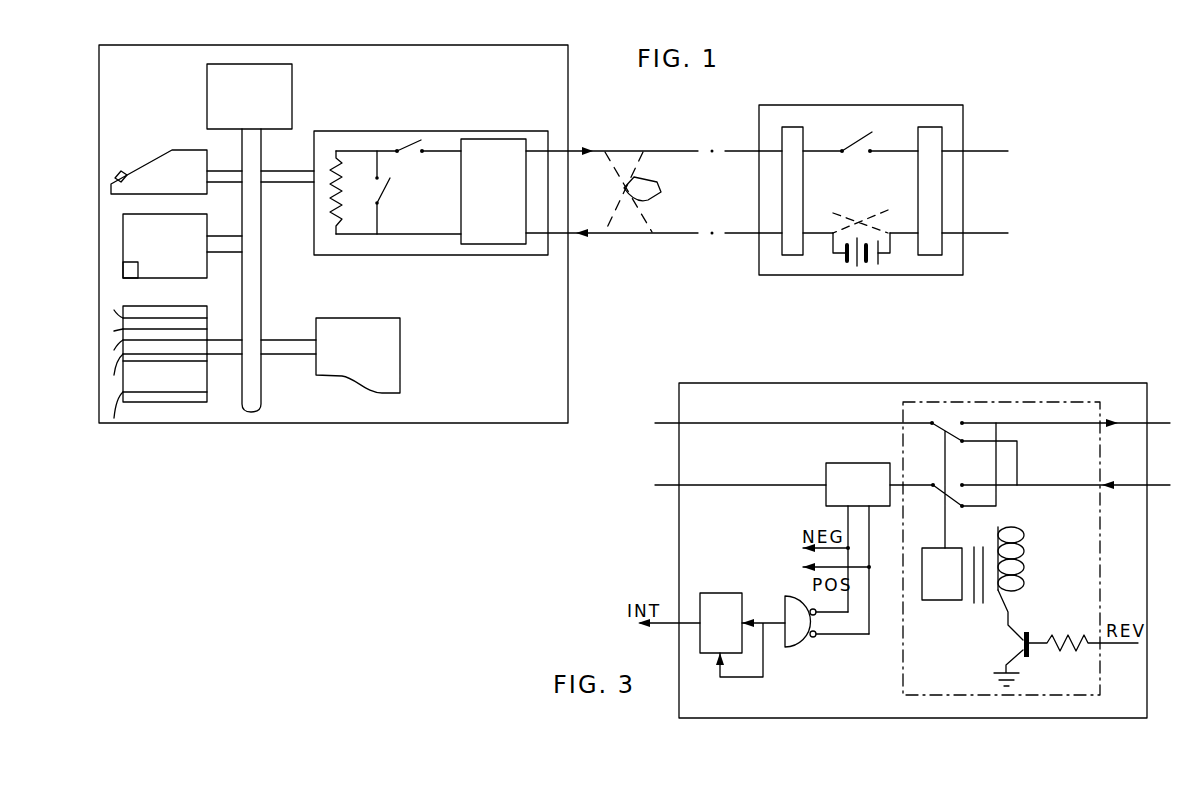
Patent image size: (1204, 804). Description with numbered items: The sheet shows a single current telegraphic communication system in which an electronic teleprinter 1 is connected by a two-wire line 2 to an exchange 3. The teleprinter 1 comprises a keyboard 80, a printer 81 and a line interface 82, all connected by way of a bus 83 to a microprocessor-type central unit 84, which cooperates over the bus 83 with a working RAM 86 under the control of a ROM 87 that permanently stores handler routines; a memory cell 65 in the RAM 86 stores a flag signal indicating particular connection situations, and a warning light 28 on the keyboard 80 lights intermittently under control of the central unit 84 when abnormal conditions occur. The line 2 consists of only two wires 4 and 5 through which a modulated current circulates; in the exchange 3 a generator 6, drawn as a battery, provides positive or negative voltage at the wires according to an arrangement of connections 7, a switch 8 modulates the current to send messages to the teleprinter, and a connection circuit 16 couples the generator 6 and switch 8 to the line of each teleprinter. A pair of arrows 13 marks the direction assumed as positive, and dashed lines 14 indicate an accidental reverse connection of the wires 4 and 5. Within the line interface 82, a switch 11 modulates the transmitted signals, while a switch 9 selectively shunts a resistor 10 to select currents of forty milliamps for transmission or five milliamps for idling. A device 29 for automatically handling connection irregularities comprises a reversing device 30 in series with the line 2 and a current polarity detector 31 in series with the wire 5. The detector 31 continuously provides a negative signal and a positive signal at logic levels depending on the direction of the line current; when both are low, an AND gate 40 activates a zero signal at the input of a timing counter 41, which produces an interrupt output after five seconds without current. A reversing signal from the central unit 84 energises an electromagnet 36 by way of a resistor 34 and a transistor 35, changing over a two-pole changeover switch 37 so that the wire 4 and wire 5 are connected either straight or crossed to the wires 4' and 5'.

In FIG. 1, the electronic teleprinter 1 is at (558, 84).
In FIG. 1, the two-wire line 2 is at (700, 244).
In FIG. 3, the two-wire line 2 is at (1159, 414).
In FIG. 1, the exchange 3 is at (873, 104).
In FIG. 1, the wire 4 is at (642, 136).
In FIG. 3, the wire 4 is at (1162, 444).
In FIG. 1, the wire 5 is at (642, 220).
In FIG. 3, the wire 5 is at (1168, 504).
In FIG. 1, the generator 6 is at (872, 258).
In FIG. 1, the arrangement of connections 7 is at (853, 213).
In FIG. 1, the switch 8 is at (846, 143).
In FIG. 1, the switch 9 is at (383, 190).
In FIG. 1, the resistor 10 is at (338, 198).
In FIG. 1, the switch 11 is at (408, 153).
In FIG. 1, the pair of arrows 13 is at (596, 155).
In FIG. 3, the pair of arrows 13 is at (1118, 428).
In FIG. 1, the dashed lines 14 is at (656, 186).
In FIG. 1, the connection circuit 16 is at (937, 285).
In FIG. 1, the warning light 28 is at (121, 171).
In FIG. 1, the device for automatically handling connection irregularities 29 is at (500, 238).
In FIG. 3, the device for automatically handling connection irregularities 29 is at (679, 569).
In FIG. 3, the reversing device 30 is at (903, 685).
In FIG. 3, the current polarity detector 31 is at (830, 496).
In FIG. 3, the resistor 34 is at (1050, 636).
In FIG. 3, the transistor 35 is at (1033, 655).
In FIG. 3, the electromagnet 36 is at (948, 594).
In FIG. 3, the two-pole changeover switch 37 is at (928, 428).
In FIG. 3, the AND gate 40 is at (797, 640).
In FIG. 3, the timing counter 41 is at (705, 593).
In FIG. 3, the wire 4' is at (912, 407).
In FIG. 3, the wire 5' is at (912, 469).
In FIG. 1, the memory cell 65 is at (133, 272).
In FIG. 1, the keyboard 80 is at (178, 152).
In FIG. 1, the printer 81 is at (392, 357).
In FIG. 1, the line interface 82 is at (395, 131).
In FIG. 1, the bus 83 is at (257, 243).
In FIG. 1, the central unit (CPU) 84 is at (292, 78).
In FIG. 1, the working RAM 86 is at (200, 262).
In FIG. 1, the ROM 87 is at (205, 380).